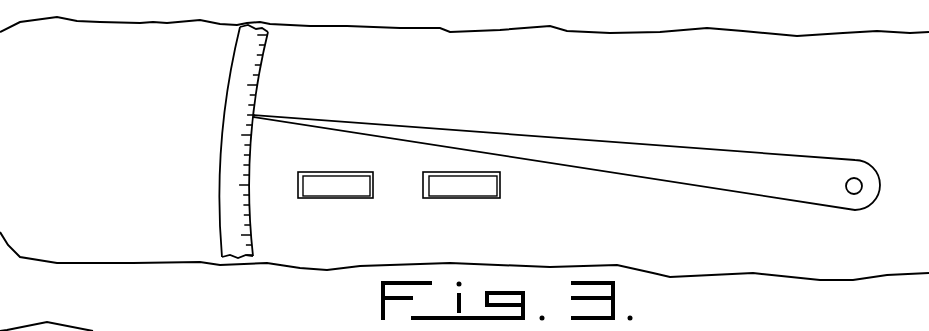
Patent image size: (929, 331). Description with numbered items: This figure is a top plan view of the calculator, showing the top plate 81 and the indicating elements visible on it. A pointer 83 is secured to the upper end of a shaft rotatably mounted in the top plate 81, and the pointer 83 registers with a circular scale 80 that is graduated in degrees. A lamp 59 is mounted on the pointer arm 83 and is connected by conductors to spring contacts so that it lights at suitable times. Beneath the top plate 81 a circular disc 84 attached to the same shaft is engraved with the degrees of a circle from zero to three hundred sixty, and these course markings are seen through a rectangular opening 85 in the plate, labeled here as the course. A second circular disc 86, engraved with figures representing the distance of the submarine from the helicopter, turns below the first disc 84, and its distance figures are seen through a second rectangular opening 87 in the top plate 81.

The lamp 59 is at (860, 182).
The circular scale 80 is at (224, 117).
The top plate 81 is at (830, 273).
The pointer 83 is at (715, 160).
The circular disc 84 is at (429, 173).
The rectangular opening 85 is at (500, 185).
The second circular disc 86 is at (303, 173).
The second rectangular opening 87 is at (367, 164).